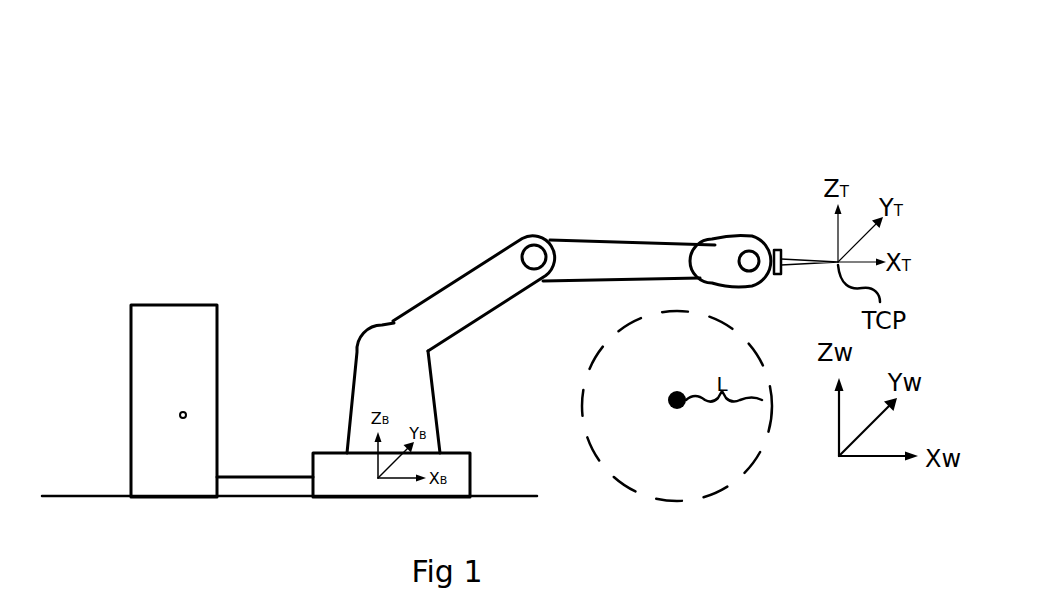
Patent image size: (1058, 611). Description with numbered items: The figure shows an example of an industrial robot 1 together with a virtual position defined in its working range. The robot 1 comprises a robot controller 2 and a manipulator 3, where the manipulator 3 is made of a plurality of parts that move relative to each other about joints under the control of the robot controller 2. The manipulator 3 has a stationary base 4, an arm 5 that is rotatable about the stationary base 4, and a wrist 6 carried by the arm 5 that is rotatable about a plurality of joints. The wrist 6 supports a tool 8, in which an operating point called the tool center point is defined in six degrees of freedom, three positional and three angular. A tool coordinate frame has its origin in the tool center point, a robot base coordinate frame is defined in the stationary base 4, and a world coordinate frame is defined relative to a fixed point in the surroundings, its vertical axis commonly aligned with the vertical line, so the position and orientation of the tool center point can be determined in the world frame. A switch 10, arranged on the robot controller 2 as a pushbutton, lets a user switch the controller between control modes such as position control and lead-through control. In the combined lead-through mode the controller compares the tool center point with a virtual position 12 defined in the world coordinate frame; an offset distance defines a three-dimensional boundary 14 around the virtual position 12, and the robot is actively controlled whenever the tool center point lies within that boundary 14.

The industrial robot 1 is at (312, 133).
The robot controller 2 is at (173, 347).
The manipulator 3 is at (428, 232).
The stationary base 4 is at (422, 403).
The arm 5 is at (531, 215).
The wrist 6 is at (750, 257).
The tool 8 is at (798, 258).
The switch 10 is at (179, 415).
The virtual position 12 is at (677, 409).
The 3D boundary 14 is at (763, 447).